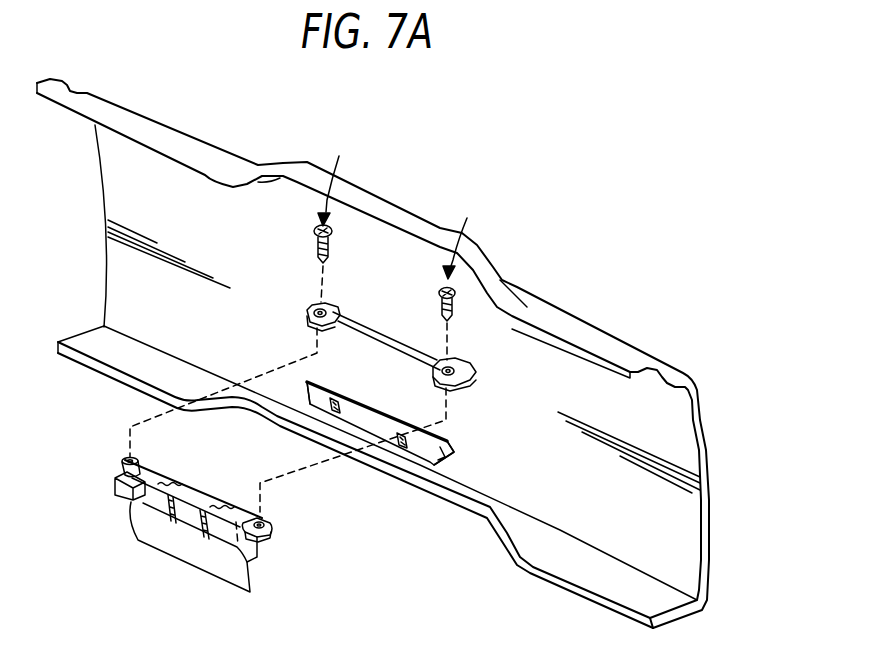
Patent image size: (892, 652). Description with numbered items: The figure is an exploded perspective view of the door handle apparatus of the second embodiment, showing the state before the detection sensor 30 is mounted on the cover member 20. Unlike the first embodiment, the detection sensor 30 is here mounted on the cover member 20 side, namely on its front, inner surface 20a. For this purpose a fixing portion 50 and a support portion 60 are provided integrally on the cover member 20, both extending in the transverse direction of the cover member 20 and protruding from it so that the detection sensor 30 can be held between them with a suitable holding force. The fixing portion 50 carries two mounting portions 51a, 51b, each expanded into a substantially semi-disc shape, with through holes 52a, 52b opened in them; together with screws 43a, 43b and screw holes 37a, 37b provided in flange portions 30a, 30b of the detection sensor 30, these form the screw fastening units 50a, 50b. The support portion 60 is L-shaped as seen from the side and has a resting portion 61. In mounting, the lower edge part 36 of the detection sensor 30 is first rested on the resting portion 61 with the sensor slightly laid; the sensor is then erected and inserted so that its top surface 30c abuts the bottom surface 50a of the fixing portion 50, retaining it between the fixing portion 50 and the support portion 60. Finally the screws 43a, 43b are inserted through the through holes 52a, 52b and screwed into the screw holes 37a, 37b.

The cover member 20 is at (575, 336).
The front surface of the cover member 20a is at (635, 535).
The detection sensor 30 is at (190, 510).
The flange portion 30a is at (282, 519).
The flange portion 30b is at (101, 456).
The top surface of the detection sensor 30c is at (200, 492).
The lower edge part 36 is at (197, 572).
The screw hole 37a is at (266, 521).
The screw hole 37b is at (129, 457).
The screw 43a is at (438, 294).
The screw 43b is at (313, 233).
The fixing portion 50 is at (325, 338).
The screw fastening unit 50a is at (377, 369).
The screw fastening unit 50b is at (339, 180).
The mounting portion 51a is at (476, 372).
The mounting portion 51b is at (289, 295).
The through hole 52a is at (453, 369).
The through hole 52b is at (307, 317).
The support portion 60 is at (403, 455).
The resting portion 61 is at (453, 445).